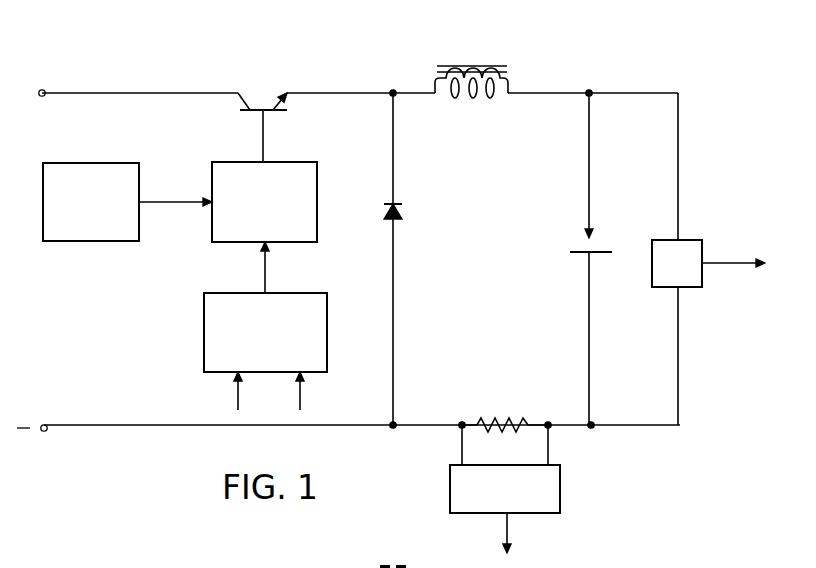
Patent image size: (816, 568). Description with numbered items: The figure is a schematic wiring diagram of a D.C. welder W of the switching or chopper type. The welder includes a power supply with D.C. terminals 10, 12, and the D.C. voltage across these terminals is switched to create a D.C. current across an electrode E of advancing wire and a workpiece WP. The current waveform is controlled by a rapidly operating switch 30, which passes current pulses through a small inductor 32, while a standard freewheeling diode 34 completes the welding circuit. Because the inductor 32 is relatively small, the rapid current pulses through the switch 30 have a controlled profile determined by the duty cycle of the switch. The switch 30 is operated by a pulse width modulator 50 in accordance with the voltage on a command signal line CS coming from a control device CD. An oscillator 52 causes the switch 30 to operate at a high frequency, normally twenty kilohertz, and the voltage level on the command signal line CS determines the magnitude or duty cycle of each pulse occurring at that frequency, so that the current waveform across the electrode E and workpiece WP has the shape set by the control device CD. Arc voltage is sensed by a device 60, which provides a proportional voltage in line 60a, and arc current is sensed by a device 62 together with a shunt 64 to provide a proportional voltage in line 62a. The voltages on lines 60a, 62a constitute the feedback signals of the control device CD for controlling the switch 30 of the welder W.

The D.C. terminal 10 is at (45, 90).
The D.C. terminal 12 is at (47, 424).
The switch 30 is at (259, 100).
The inductor 32 is at (510, 78).
The freewheeling diode 34 is at (400, 213).
The pulse width modulator 50 is at (318, 175).
The oscillator 52 is at (70, 243).
The arc voltage sensing device 60 is at (697, 242).
The arc voltage line 60a is at (236, 396).
The arc current sensing device 62 is at (560, 483).
The arc current line 62a is at (302, 398).
The shunt 64 is at (503, 418).
The D.C. welder W is at (358, 70).
The electrode E is at (583, 234).
The workpiece WP is at (576, 256).
The command signal line CS is at (262, 267).
The control device CD is at (328, 328).